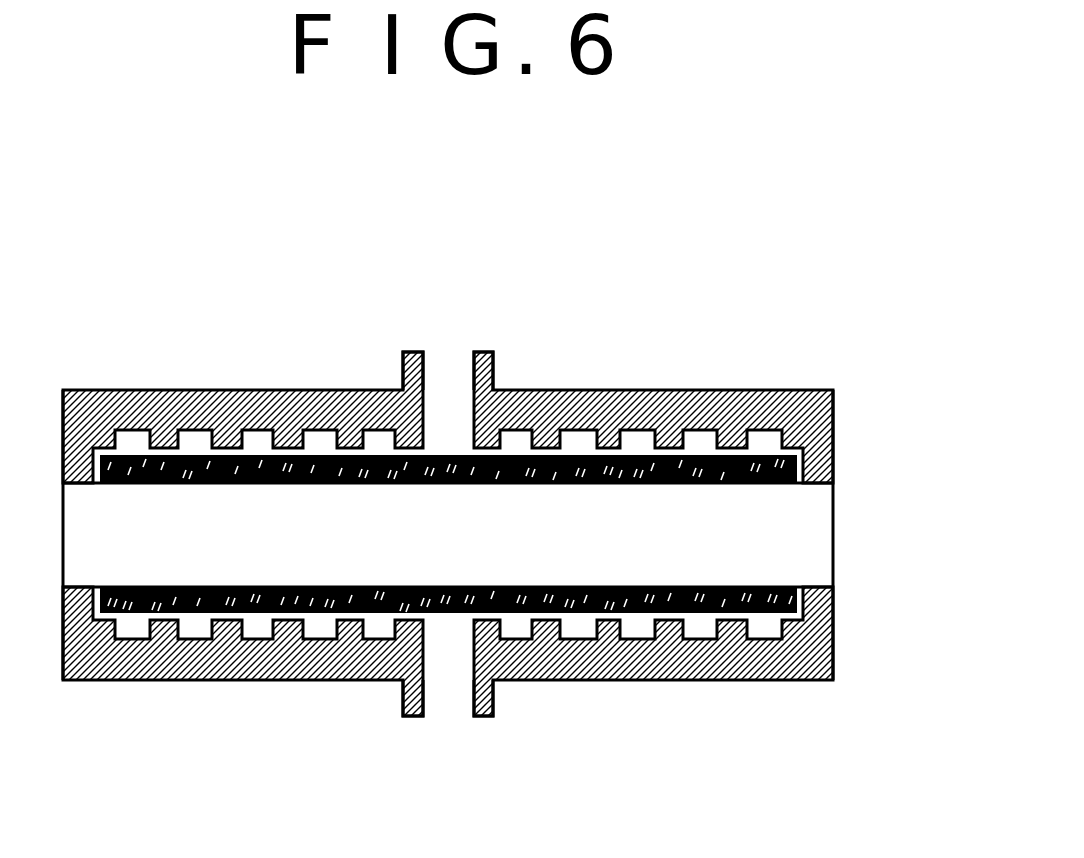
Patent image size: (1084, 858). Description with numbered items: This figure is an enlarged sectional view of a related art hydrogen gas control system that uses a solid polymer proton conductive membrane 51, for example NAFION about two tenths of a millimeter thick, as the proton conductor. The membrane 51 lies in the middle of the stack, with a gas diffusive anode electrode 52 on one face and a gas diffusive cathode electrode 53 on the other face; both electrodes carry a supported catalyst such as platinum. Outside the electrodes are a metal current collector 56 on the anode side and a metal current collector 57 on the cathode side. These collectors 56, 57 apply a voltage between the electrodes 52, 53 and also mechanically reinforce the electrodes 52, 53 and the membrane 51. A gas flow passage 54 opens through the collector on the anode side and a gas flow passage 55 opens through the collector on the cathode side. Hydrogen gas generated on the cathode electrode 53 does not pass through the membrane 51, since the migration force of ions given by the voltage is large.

The solid polymer proton conductive membrane 51 is at (762, 532).
The gas diffusive anode electrode 52 is at (835, 603).
The gas diffusive cathode electrode 53 is at (835, 477).
The gas flow passage on the anode side 54 is at (450, 680).
The gas flow passage on the cathode side 55 is at (448, 380).
The metal current collector on the anode side 56 is at (738, 680).
The metal current collector on the cathode side 57 is at (735, 405).